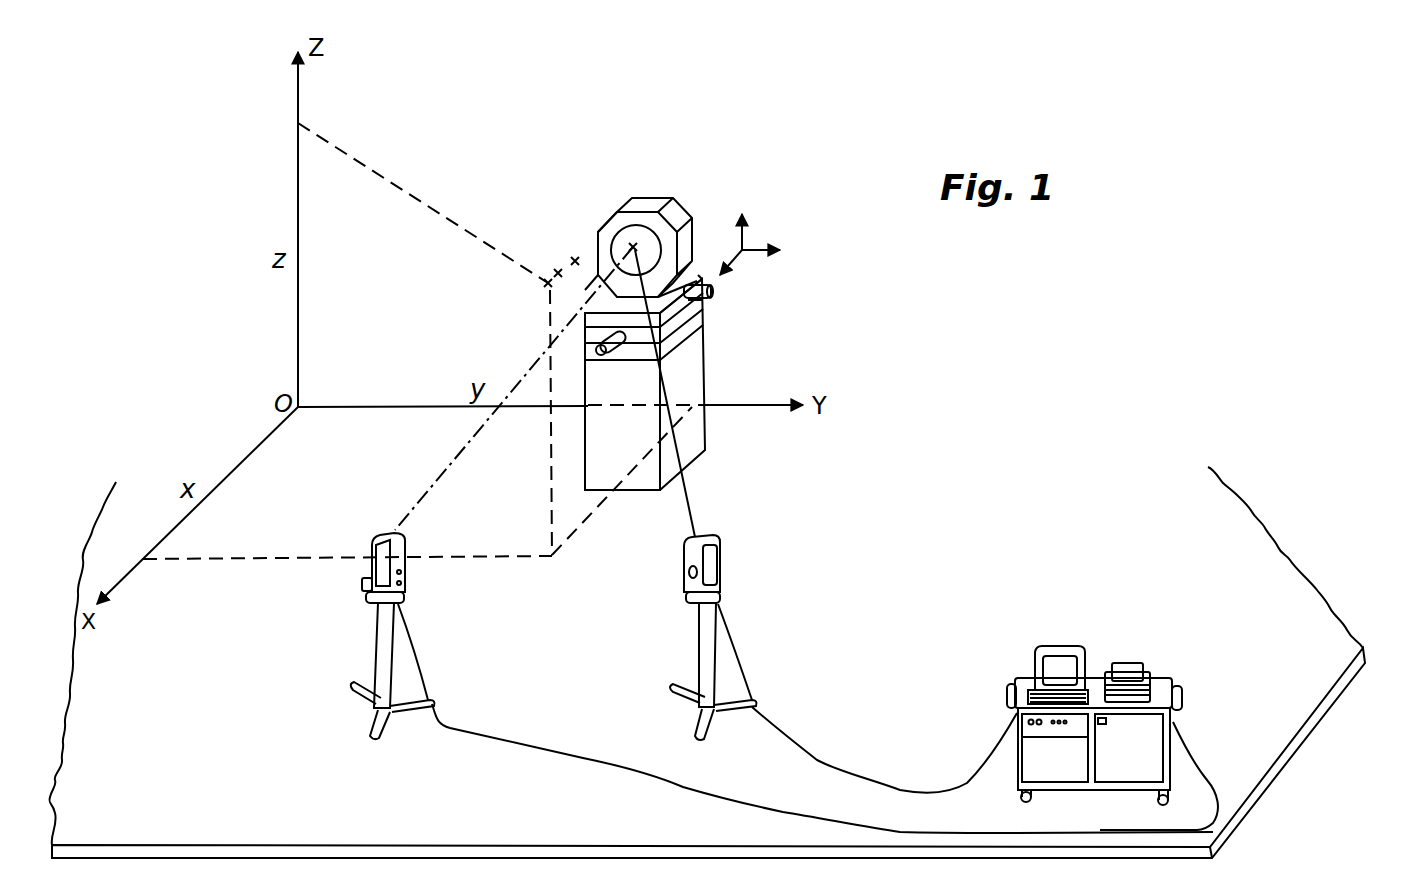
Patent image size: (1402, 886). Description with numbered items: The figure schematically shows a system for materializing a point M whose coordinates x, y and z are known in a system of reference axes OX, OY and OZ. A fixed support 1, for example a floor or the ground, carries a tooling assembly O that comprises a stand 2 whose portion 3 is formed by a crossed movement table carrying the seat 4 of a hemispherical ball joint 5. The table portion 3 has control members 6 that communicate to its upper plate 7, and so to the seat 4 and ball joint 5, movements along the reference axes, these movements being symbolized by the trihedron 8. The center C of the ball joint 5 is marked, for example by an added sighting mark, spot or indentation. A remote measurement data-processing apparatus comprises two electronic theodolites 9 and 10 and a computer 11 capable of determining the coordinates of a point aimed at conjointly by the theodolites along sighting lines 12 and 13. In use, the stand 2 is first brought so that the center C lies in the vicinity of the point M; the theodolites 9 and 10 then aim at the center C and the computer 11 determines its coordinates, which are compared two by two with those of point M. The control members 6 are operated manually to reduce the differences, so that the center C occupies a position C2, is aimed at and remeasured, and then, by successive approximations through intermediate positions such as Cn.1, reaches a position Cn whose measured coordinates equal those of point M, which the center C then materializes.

The fixed support 1 is at (1303, 713).
The stand 2 is at (703, 355).
The portion formed by a crossed movement table 3 is at (712, 308).
The seat 4 is at (668, 215).
The hemispherical ball joint 5 is at (636, 232).
The control members 6 is at (715, 290).
The upper plate 7 is at (698, 275).
The trihedron 8 is at (757, 238).
The electronic theodolite 9 is at (700, 648).
The electronic theodolite 10 is at (383, 627).
The computer 11 is at (1165, 675).
The sighting line 12 is at (690, 490).
The sighting line 13 is at (462, 456).
The tooling assembly O is at (801, 345).
The point M is at (543, 283).
The center of the ball joint C is at (612, 212).
The position of center C after the nth operation Cn is at (546, 288).
The intermediate position of center C Cn.1 is at (556, 272).
The position C2 of center C C2 is at (573, 258).